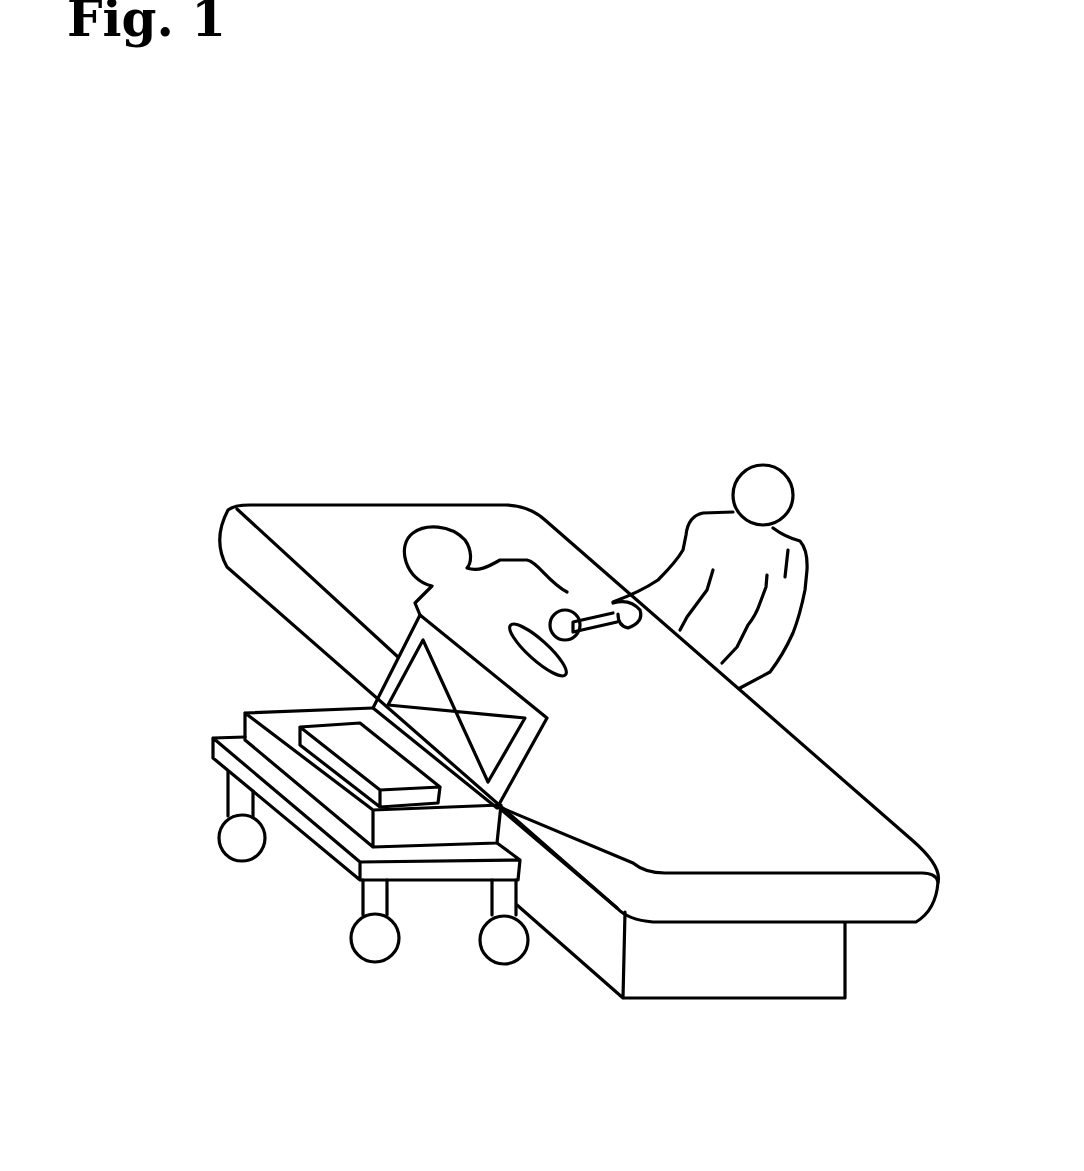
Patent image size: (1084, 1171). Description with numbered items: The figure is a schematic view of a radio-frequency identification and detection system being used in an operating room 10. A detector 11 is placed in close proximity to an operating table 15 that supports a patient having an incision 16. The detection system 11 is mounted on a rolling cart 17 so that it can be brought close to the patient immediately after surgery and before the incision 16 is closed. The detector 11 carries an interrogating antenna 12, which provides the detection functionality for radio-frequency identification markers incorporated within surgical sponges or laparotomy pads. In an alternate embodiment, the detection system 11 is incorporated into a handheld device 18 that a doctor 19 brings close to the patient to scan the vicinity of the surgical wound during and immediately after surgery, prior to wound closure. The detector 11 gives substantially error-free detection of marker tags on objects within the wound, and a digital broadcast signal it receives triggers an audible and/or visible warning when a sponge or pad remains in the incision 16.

The operating room 10 is at (713, 313).
The detector 11 is at (355, 743).
The interrogating antenna 12 is at (403, 653).
The operating table 15 is at (228, 510).
The incision 16 is at (567, 673).
The rolling cart 17 is at (212, 740).
The handheld device 18 is at (580, 637).
The doctor 19 is at (795, 542).